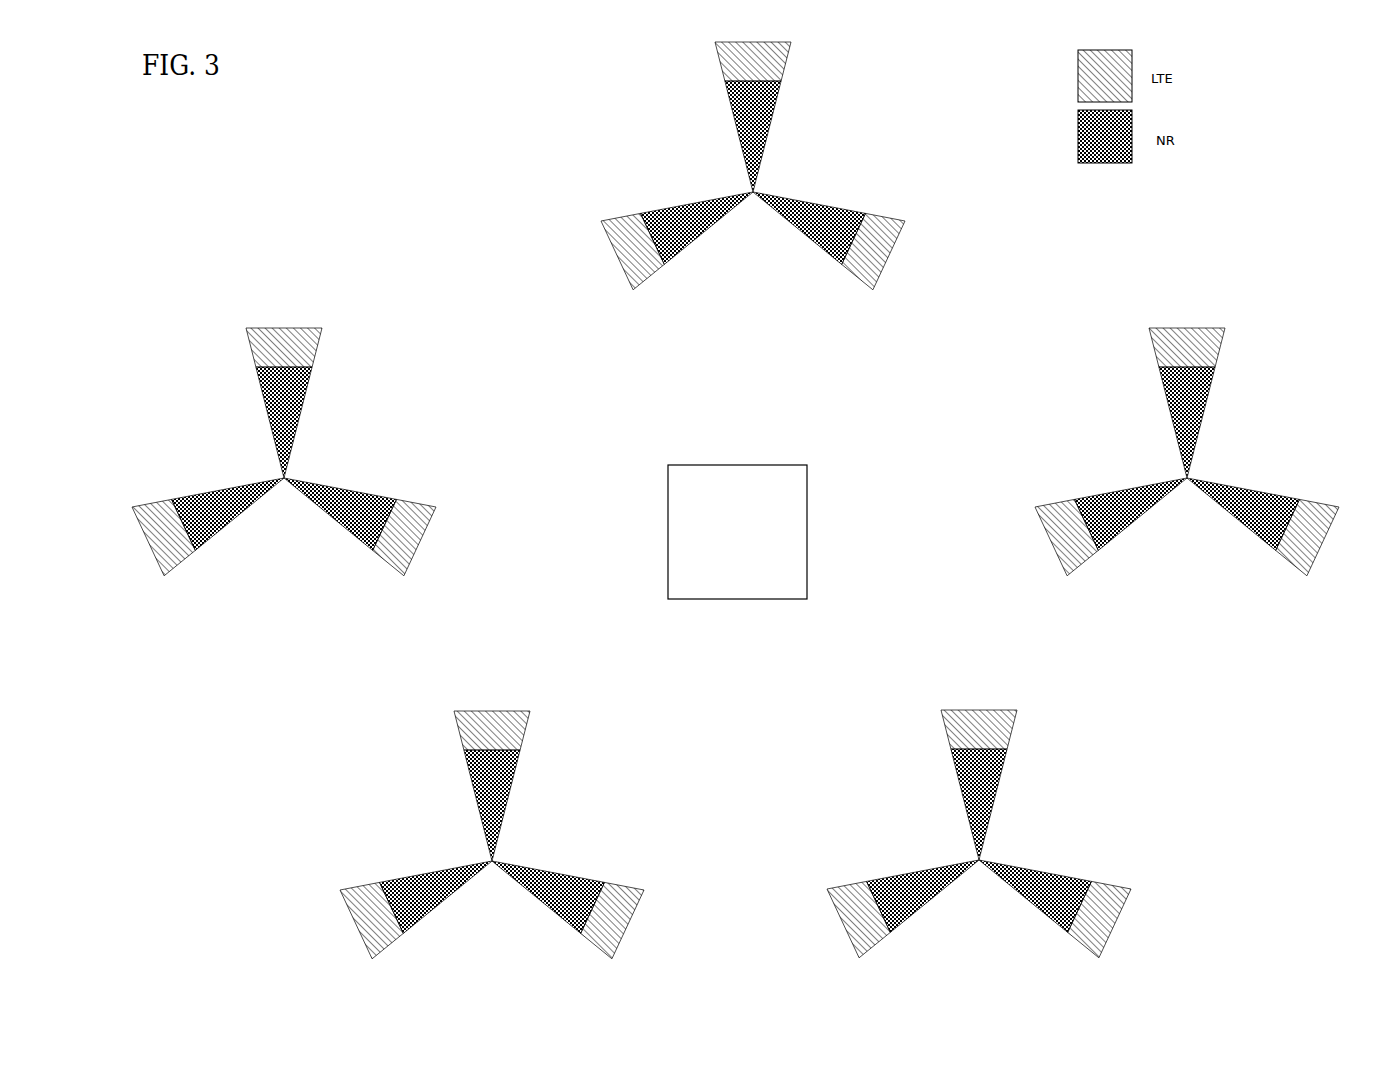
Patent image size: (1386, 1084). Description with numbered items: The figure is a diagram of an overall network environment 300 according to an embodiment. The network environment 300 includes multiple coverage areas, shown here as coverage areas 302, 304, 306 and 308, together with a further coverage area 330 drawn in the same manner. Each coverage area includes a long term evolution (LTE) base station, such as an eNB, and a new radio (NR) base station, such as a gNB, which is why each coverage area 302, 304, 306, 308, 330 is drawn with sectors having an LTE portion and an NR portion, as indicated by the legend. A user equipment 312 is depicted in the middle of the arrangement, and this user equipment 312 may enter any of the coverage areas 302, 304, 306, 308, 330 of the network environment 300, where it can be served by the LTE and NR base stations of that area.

The network environment 300 is at (409, 113).
The coverage area 302 is at (877, 214).
The coverage area 304 is at (1186, 328).
The coverage area 306 is at (976, 710).
The coverage area 308 is at (492, 711).
The cell with LTE and NR sectors 330 is at (285, 328).
The user equipment 312 is at (713, 568).